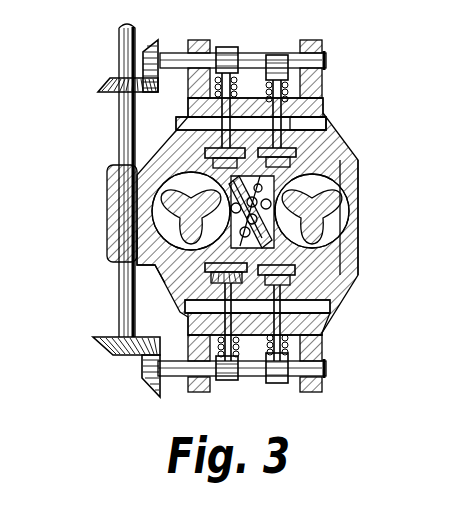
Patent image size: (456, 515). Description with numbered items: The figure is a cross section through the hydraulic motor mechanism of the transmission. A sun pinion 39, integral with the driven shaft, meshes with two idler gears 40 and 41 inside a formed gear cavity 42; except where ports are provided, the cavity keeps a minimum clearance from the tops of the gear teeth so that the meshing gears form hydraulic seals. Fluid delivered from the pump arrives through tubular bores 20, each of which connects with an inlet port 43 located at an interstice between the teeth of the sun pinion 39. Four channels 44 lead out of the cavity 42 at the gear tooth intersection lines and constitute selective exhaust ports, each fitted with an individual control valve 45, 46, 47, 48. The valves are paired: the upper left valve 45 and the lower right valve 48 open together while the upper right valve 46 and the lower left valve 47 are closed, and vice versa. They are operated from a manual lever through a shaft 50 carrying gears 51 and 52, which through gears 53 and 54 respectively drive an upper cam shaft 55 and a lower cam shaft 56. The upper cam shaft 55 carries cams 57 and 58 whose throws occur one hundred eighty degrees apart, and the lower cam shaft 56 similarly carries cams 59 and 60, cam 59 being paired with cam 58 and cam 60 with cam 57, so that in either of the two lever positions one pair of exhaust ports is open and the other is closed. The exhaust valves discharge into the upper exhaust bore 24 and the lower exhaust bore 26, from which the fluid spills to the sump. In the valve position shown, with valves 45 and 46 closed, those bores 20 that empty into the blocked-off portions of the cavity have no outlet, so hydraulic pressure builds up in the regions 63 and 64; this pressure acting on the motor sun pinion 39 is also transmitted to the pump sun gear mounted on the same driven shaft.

The tubular bore 20 is at (358, 177).
The upper exhaust bore 24 is at (328, 115).
The lower exhaust bore 26 is at (320, 330).
The sun pinion 39 is at (353, 152).
The idler gear 40 is at (358, 192).
The idler gear 41 is at (137, 232).
The gear cavity 42 is at (137, 272).
The inlet port 43 is at (350, 153).
The channel 44 is at (340, 192).
The control valve 45 is at (207, 120).
The control valve 46 is at (292, 127).
The control valve 47 is at (200, 307).
The control valve 48 is at (343, 284).
The shaft 50 is at (125, 125).
The gear 51 is at (100, 84).
The gear 52 is at (132, 352).
The gear 53 is at (146, 52).
The gear 54 is at (143, 382).
The upper cam shaft 55 is at (178, 57).
The lower cam shaft 56 is at (190, 392).
The cam 57 is at (216, 50).
The cam 58 is at (268, 58).
The cam 59 is at (246, 379).
The cam 60 is at (292, 378).
The region 63 is at (307, 243).
The region 64 is at (209, 176).